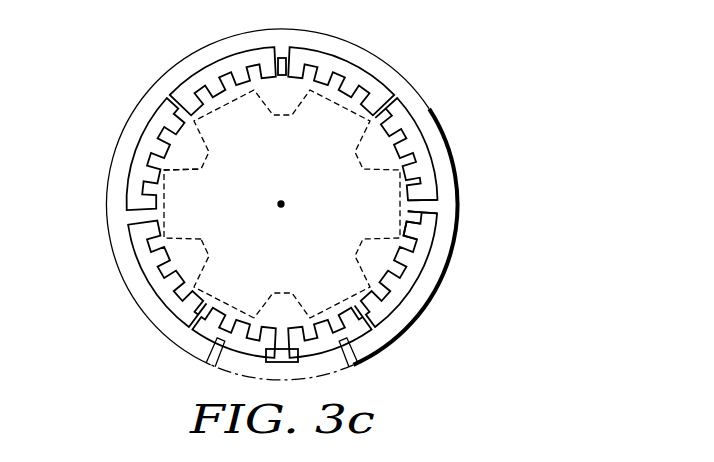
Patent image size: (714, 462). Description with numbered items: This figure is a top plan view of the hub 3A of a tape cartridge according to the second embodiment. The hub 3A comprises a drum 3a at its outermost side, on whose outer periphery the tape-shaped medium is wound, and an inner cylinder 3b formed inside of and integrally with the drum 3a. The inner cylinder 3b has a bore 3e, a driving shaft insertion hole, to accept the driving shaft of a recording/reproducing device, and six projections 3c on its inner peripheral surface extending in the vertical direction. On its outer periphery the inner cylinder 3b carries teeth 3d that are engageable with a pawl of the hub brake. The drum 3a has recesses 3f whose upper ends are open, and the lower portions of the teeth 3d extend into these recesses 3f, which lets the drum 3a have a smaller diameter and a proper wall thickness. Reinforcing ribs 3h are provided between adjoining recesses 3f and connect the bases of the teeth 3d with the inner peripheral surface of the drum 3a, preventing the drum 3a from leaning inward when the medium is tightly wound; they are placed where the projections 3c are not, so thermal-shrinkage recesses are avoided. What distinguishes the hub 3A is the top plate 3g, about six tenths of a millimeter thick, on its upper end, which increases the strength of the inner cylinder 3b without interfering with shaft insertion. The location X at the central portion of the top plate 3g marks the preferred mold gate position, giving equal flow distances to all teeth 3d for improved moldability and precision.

The hub 3A is at (467, 285).
The drum 3a is at (438, 295).
The inner cylinder 3b is at (338, 305).
The projections 3c is at (208, 254).
The teeth 3d is at (408, 240).
The bore (driving shaft insertion hole) 3e is at (187, 183).
The recesses 3f is at (396, 286).
The top plate 3g is at (232, 123).
The reinforcing ribs 3h is at (430, 211).
The gate location X is at (279, 204).